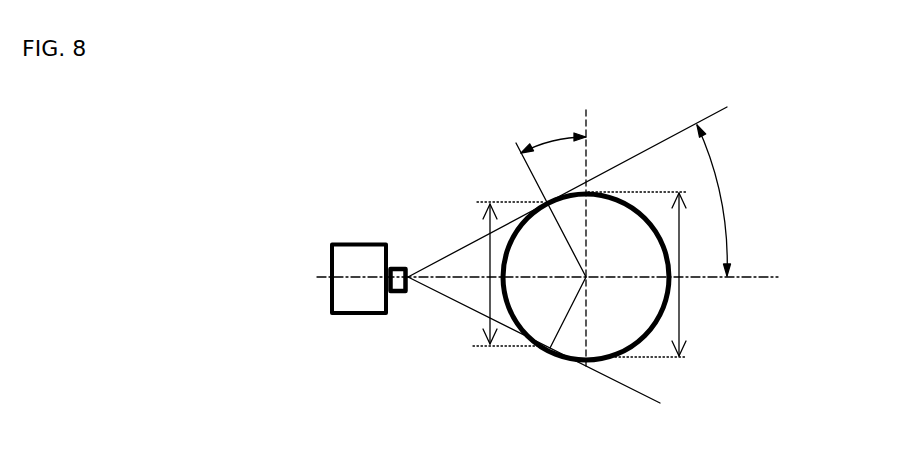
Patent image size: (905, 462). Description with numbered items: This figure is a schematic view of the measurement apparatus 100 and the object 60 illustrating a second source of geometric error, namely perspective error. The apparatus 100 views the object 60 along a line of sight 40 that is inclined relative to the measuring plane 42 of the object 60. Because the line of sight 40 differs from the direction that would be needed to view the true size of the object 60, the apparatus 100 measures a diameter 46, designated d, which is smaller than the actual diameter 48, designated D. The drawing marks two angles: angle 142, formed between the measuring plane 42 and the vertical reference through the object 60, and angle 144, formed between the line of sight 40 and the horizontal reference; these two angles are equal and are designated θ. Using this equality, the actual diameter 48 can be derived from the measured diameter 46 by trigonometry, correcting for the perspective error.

The apparatus 100 is at (361, 255).
The line of sight 40 is at (450, 302).
The object 60 is at (640, 345).
The measuring plane 42 is at (588, 153).
The diameter 46 is at (488, 260).
The actual diameter 48 is at (678, 300).
The angle 142 is at (547, 138).
The angle 144 is at (708, 160).